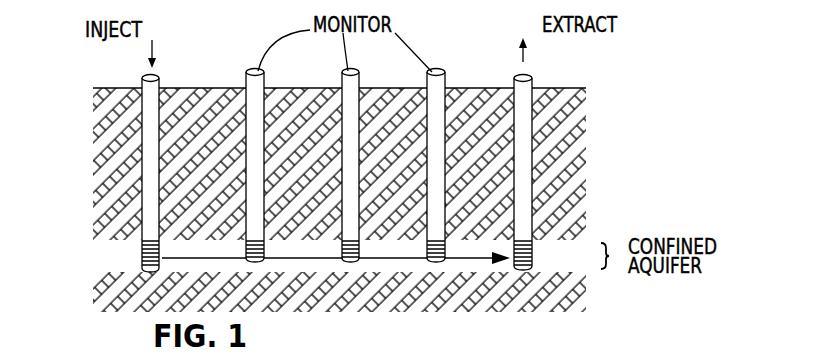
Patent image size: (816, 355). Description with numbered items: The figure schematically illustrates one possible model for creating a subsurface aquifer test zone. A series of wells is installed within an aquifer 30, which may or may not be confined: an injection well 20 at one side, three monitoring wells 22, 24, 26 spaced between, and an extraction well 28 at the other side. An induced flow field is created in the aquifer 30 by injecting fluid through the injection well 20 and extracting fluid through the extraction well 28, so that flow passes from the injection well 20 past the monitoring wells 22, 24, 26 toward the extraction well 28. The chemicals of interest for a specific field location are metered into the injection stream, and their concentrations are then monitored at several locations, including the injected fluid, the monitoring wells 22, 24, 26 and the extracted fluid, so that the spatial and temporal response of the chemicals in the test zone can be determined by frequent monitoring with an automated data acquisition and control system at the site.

The injection well 20 is at (145, 207).
The monitoring well 22 is at (262, 240).
The monitoring well 24 is at (355, 240).
The monitoring well 26 is at (440, 240).
The extraction well 28 is at (523, 189).
The aquifer 30 is at (107, 258).